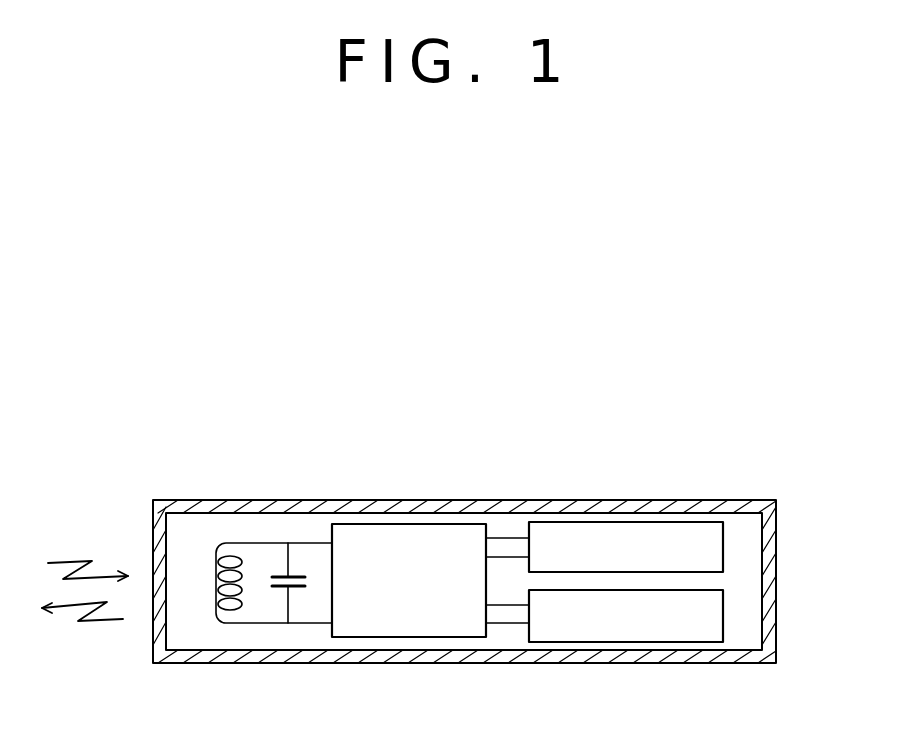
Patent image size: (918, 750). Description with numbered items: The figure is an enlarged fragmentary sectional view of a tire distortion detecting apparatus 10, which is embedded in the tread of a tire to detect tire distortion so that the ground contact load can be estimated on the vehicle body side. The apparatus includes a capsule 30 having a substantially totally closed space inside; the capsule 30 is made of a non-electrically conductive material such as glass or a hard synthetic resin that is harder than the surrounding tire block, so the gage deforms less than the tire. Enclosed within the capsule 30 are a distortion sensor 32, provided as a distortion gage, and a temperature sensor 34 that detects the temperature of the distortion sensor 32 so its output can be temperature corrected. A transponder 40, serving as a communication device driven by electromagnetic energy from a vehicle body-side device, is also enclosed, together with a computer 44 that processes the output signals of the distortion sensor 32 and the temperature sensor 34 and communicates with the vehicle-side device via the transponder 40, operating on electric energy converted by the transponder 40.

The tire distortion detecting apparatus 10 is at (450, 576).
The capsule 30 is at (768, 557).
The distortion sensor 32 is at (683, 642).
The temperature sensor 34 is at (655, 520).
The transponder 40 is at (270, 535).
The computer 44 is at (442, 536).